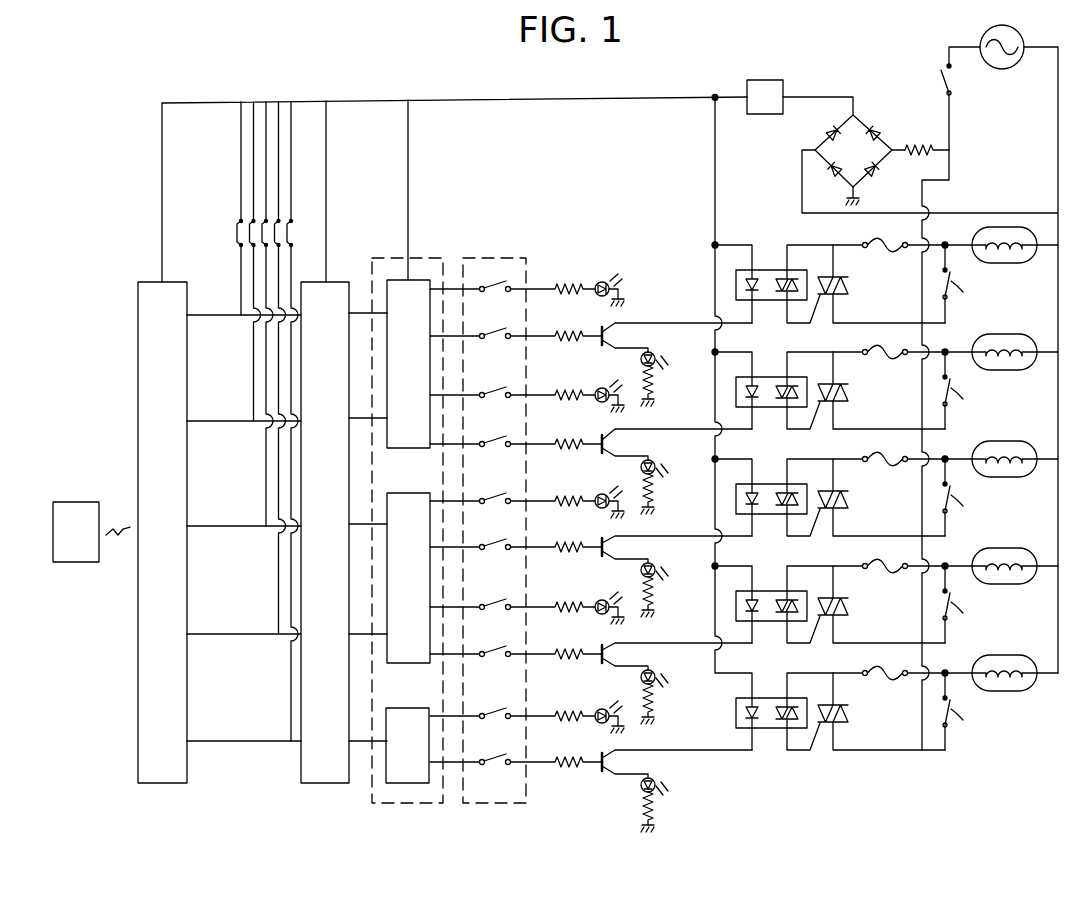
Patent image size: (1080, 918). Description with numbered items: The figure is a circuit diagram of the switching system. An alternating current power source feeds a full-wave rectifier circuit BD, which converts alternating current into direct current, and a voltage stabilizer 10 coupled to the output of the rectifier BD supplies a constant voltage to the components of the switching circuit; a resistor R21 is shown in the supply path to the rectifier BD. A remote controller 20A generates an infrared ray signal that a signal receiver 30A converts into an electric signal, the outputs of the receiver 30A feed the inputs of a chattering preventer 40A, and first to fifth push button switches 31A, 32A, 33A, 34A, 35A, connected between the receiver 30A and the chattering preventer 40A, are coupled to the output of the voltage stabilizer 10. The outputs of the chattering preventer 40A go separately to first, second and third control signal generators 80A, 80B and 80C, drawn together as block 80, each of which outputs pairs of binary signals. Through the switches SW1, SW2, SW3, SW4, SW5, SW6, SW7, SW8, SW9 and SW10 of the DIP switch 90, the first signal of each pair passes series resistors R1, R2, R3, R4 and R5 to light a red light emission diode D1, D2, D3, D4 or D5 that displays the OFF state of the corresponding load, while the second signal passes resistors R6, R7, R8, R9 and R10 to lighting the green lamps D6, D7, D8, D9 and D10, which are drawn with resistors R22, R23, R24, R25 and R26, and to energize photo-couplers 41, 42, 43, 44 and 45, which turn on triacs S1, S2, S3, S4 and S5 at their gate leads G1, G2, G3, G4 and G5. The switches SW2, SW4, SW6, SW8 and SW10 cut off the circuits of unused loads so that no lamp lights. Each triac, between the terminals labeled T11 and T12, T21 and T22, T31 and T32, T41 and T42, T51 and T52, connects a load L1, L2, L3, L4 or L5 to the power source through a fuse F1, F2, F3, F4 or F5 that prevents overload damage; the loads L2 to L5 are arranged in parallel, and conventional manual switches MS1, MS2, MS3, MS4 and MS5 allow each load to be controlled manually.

The voltage stabilizer 10 is at (765, 97).
The remote controller 20A is at (60, 541).
The signal receiver 30A is at (180, 541).
The first push button switch 31A is at (241, 222).
The second push button switch 32A is at (254, 222).
The third push button switch 33A is at (266, 222).
The fourth push button switch 34A is at (278, 222).
The fifth push button switch 35A is at (291, 243).
The chattering preventer 40A is at (343, 541).
The photo-coupler 41 is at (766, 268).
The photo-coupler 42 is at (771, 409).
The photo-coupler 43 is at (771, 516).
The photo-coupler 44 is at (771, 623).
The photo-coupler 45 is at (771, 730).
The driver circuit 80 is at (421, 258).
The first control signal generator 80A is at (426, 380).
The second control signal generator 80B is at (426, 593).
The third control signal generator 80C is at (425, 761).
The DIP switch 90 is at (506, 258).
The full-wave rectifier circuit BD is at (843, 160).
The resistor R1 is at (553, 272).
The resistor R2 is at (553, 378).
The resistor R3 is at (553, 484).
The resistor R4 is at (553, 590).
The resistor R5 is at (553, 699).
The resistor R6 is at (557, 319).
The resistor R7 is at (557, 427).
The resistor R8 is at (557, 530).
The resistor R9 is at (557, 637).
The resistor R10 is at (557, 745).
The resistor R21 is at (927, 136).
The resistor R22 is at (668, 394).
The resistor R23 is at (668, 502).
The resistor R24 is at (668, 605).
The resistor R25 is at (668, 712).
The resistor R26 is at (668, 820).
The first red LED lamp D1 is at (609, 274).
The first red LED lamp D2 is at (609, 380).
The first red LED lamp D3 is at (609, 486).
The first red LED lamp D4 is at (609, 592).
The first red LED lamp D5 is at (609, 701).
The second green LED lamp D6 is at (663, 353).
The second green LED lamp D7 is at (663, 461).
The second green LED lamp D8 is at (663, 564).
The second green LED lamp D9 is at (663, 671).
The second green LED lamp D10 is at (668, 779).
The switch SW1 is at (474, 305).
The switch SW2 is at (474, 352).
The switch SW3 is at (474, 411).
The switch SW4 is at (474, 460).
The switch SW5 is at (474, 517).
The switch SW6 is at (474, 563).
The switch SW7 is at (474, 623).
The switch SW8 is at (474, 670).
The switch SW9 is at (474, 732).
The switch SW10 is at (477, 778).
The first triac S1 is at (847, 287).
The second triac S2 is at (847, 394).
The third triac S3 is at (847, 501).
The fourth triac S4 is at (847, 608).
The fifth triac S5 is at (847, 715).
The triac terminal T11 is at (851, 261).
The triac terminal T12 is at (889, 309).
The triac terminal T21 is at (851, 368).
The triac terminal T22 is at (889, 416).
The triac terminal T31 is at (851, 475).
The triac terminal T32 is at (889, 523).
The triac terminal T41 is at (851, 582).
The triac terminal T42 is at (889, 630).
The triac terminal T51 is at (851, 689).
The triac terminal T52 is at (889, 737).
The gate terminal G1 is at (813, 324).
The gate terminal G2 is at (813, 431).
The gate terminal G3 is at (813, 538).
The gate terminal G4 is at (813, 645).
The gate terminal G5 is at (813, 752).
The fuse F1 is at (885, 233).
The fuse F2 is at (885, 340).
The fuse F3 is at (885, 447).
The fuse F4 is at (885, 554).
The fuse F5 is at (885, 661).
The first load L1 is at (1010, 259).
The second load L2 is at (1010, 340).
The third load L3 is at (1010, 447).
The fourth load L4 is at (1010, 554).
The fifth load L5 is at (1010, 661).
The manual switch MS1 is at (978, 284).
The manual switch MS2 is at (978, 390).
The manual switch MS3 is at (978, 497).
The manual switch MS4 is at (978, 604).
The manual switch MS5 is at (978, 711).